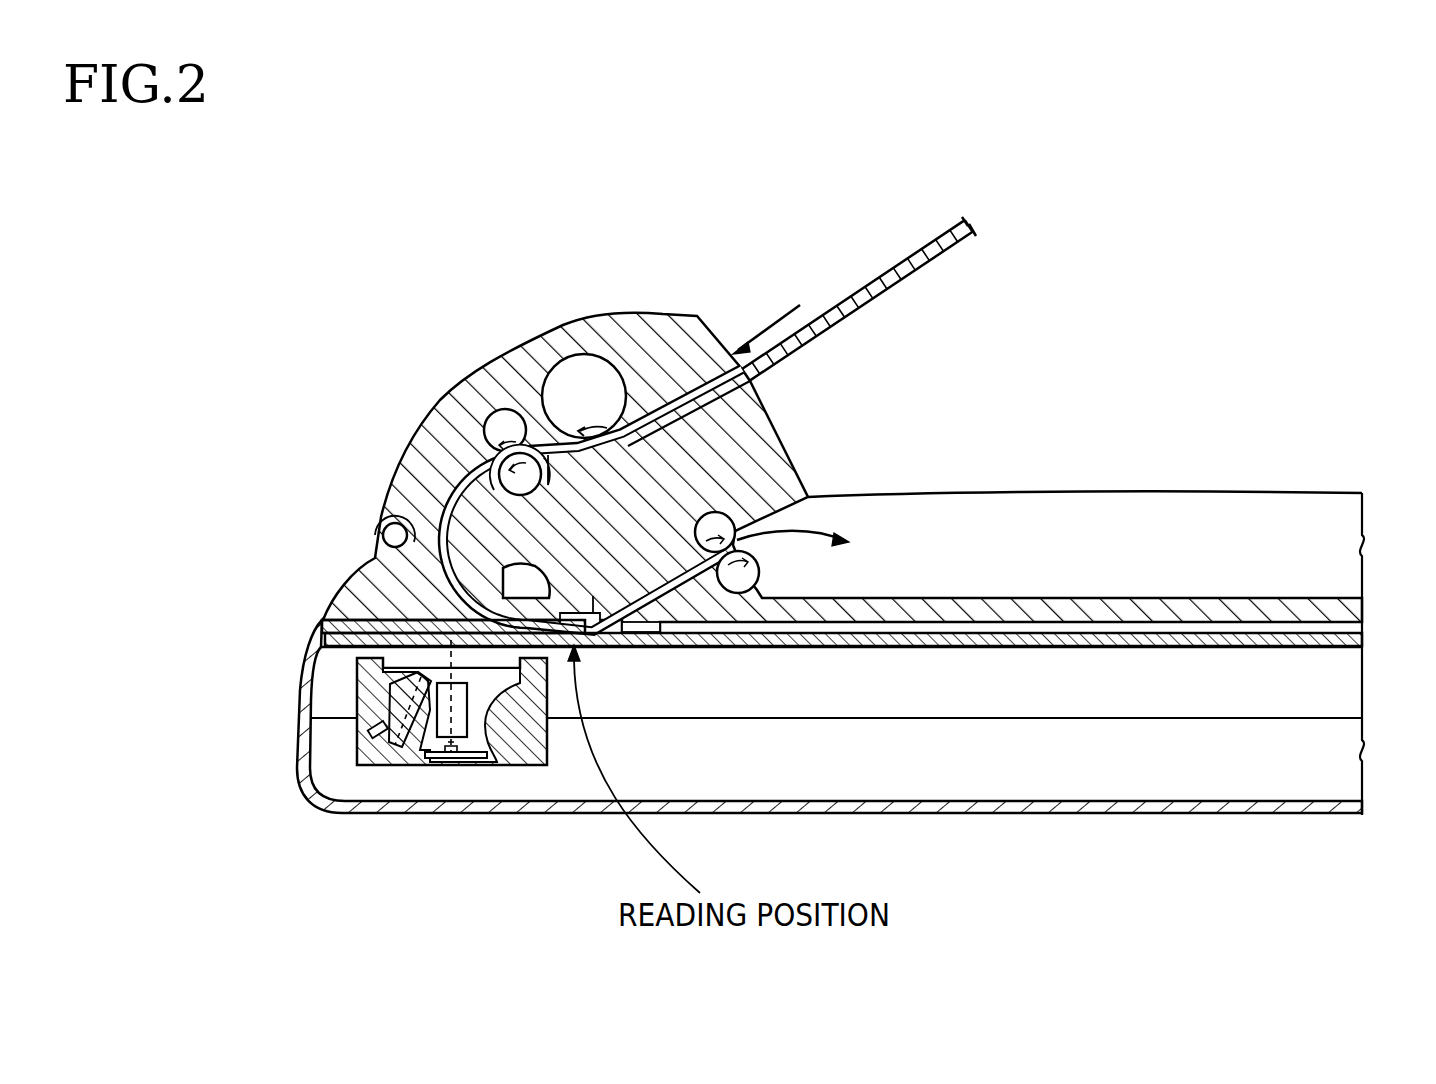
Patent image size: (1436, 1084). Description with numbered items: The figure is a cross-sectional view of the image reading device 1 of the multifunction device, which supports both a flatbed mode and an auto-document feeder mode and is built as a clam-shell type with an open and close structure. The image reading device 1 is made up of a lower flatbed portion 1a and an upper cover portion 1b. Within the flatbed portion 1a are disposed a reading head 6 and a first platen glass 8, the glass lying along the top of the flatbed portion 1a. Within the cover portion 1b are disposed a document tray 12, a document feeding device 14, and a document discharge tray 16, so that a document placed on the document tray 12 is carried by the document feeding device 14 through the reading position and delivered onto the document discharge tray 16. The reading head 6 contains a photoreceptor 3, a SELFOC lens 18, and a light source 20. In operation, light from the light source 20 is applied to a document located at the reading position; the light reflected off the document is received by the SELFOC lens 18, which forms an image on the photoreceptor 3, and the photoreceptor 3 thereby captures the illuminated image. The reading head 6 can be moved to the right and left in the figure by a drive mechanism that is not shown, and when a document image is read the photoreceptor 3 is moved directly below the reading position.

The image reading device 1 is at (857, 553).
The flatbed portion 1a is at (1340, 748).
The cover portion 1b is at (1333, 549).
The photoreceptor 3 is at (450, 760).
The reading head 6 is at (391, 768).
The first platen glass 8 is at (582, 652).
The document tray 12 is at (852, 305).
The document feeding device 14 is at (437, 422).
The document discharge tray 16 is at (938, 598).
The SELFOC lens 18 is at (463, 713).
The light source 20 is at (378, 745).